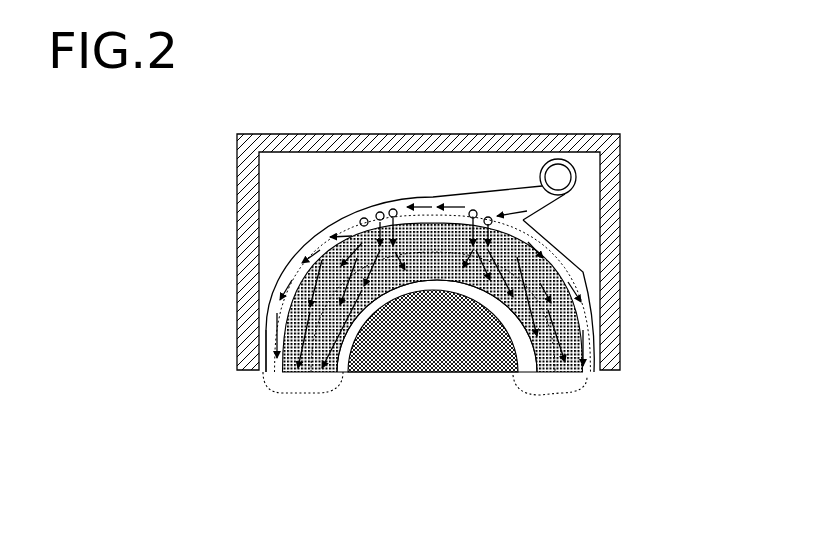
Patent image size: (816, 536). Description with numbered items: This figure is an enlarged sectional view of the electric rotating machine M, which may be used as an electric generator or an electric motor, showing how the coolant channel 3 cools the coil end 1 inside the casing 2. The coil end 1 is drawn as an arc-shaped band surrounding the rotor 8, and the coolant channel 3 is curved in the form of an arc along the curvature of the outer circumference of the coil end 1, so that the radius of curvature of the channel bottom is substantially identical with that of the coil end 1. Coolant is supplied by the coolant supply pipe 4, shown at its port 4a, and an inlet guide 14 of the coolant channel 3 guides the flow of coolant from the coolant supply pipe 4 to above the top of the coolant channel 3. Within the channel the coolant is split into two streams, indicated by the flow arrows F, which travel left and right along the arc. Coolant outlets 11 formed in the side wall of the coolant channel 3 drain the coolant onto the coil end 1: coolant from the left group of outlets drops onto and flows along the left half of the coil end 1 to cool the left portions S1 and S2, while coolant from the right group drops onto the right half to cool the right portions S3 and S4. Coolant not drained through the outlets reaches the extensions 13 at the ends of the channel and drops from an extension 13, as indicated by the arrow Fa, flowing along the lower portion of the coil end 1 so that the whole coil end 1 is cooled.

The electric rotating machine M is at (274, 130).
The coil end 1 is at (580, 327).
The casing 2 is at (550, 345).
The coolant channel 3 is at (573, 273).
The coolant supply pipe 4 is at (547, 159).
The supply port 4a is at (577, 176).
The rotor 8 is at (432, 374).
The coolant outlets 11 is at (488, 218).
The extensions 13 is at (287, 297).
The inlet guide 14 is at (497, 205).
The fluid flow F is at (316, 258).
The arrow Fa is at (272, 334).
The left portion of the coil end S1 is at (282, 392).
The left portion of the coil end S2 is at (363, 375).
The right portion of the coil end S3 is at (483, 375).
The right portion of the coil end S4 is at (560, 393).